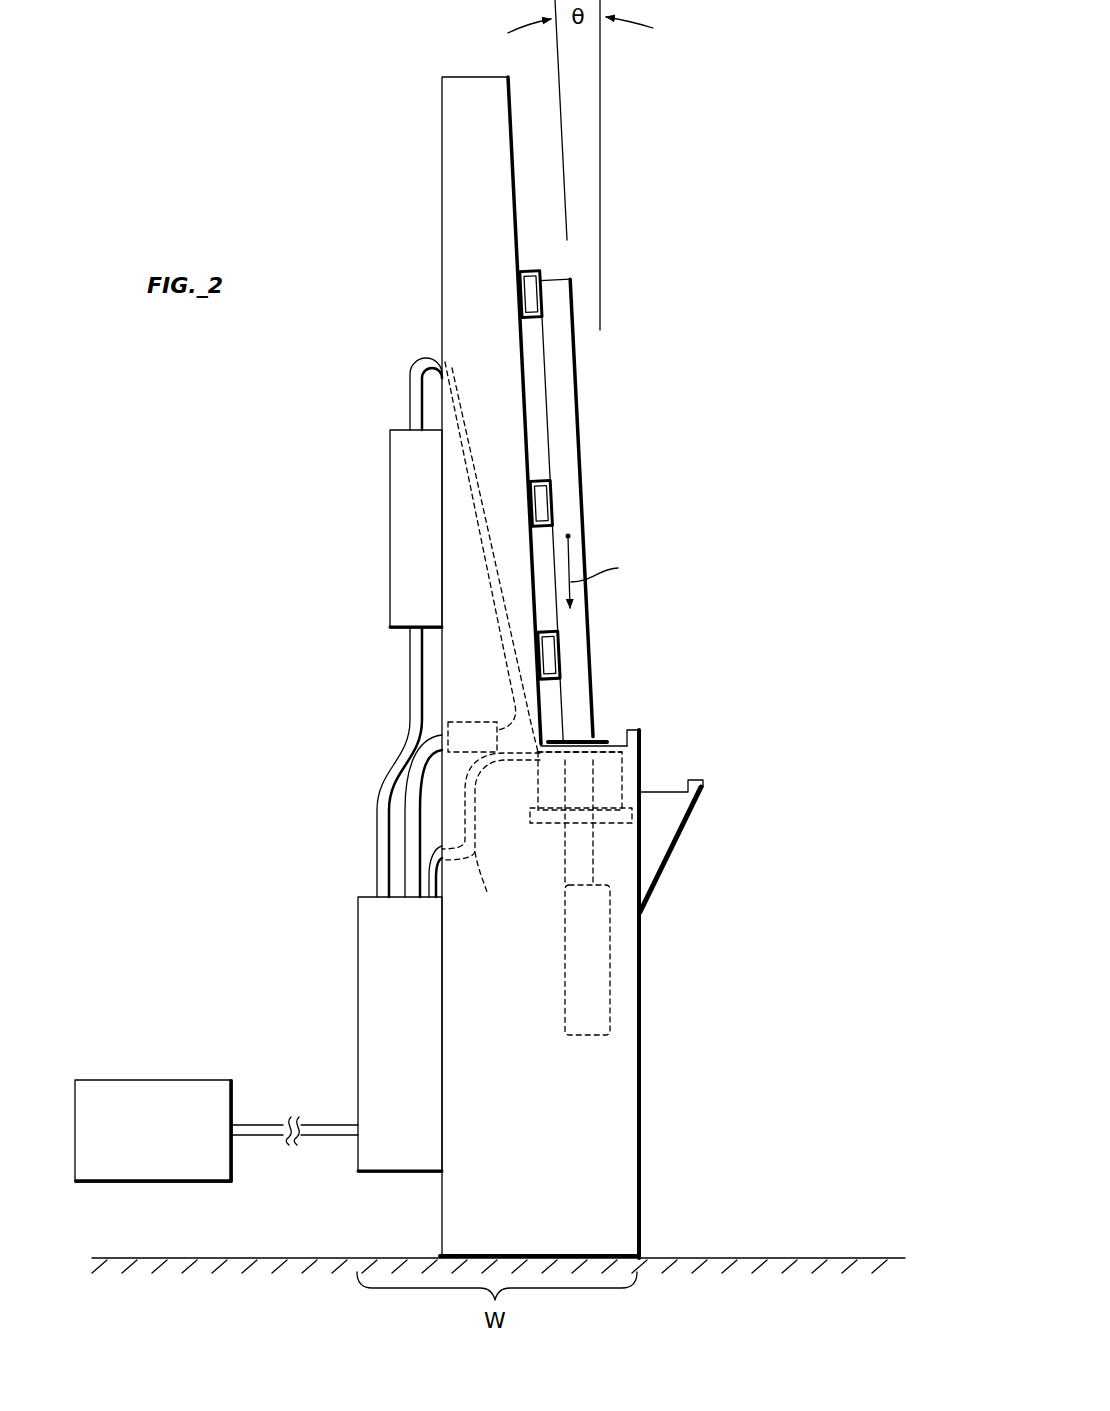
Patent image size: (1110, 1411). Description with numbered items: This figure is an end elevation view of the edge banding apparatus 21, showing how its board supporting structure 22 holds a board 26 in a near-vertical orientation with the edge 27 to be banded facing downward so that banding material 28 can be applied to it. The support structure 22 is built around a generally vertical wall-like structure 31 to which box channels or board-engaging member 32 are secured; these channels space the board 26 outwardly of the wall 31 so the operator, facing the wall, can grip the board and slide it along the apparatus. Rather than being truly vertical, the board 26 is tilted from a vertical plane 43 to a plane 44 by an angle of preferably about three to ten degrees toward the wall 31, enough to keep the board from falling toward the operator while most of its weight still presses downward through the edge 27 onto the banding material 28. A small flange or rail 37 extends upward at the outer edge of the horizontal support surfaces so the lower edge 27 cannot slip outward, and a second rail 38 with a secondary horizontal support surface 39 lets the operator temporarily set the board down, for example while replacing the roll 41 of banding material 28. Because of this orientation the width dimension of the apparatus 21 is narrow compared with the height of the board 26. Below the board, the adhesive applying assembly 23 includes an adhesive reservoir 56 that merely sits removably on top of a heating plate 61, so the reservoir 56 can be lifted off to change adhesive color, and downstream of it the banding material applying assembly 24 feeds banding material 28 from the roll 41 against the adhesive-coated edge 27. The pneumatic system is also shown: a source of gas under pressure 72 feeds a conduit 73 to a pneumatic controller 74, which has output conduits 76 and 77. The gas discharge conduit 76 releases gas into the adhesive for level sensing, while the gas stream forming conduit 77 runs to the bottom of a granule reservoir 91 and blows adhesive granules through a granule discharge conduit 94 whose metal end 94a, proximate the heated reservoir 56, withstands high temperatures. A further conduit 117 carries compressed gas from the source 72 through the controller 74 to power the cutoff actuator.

The edge banding apparatus 21 is at (744, 85).
The board supporting structure 22 is at (588, 489).
The adhesive applying assembly 23 is at (551, 979).
The banding material applying assembly 24 is at (634, 976).
The board 26 is at (566, 504).
The edge 27 is at (577, 748).
The banding material 28 is at (597, 853).
The wall-like structure 31 is at (442, 200).
The board-engaging member 32 is at (540, 475).
The rail 37 is at (642, 735).
The second rail 38 is at (708, 787).
The horizontal support surface 39 is at (642, 780).
The roll 41 is at (590, 1035).
The vertical plane 43 is at (600, 133).
The plane 44 is at (559, 83).
The adhesive reservoir 56 is at (530, 788).
The heating plate 61 is at (548, 832).
The source of gas under pressure 72 is at (117, 1080).
The conduit 73 is at (260, 1137).
The pneumatic controller 74 is at (380, 1022).
The gas discharge conduit 76 is at (437, 877).
The gas stream forming conduit 77 is at (376, 828).
The granule reservoir 91 is at (390, 525).
The granule discharge conduit 94 is at (408, 398).
The end of conduit 94a is at (497, 623).
The conduit 117 is at (405, 870).